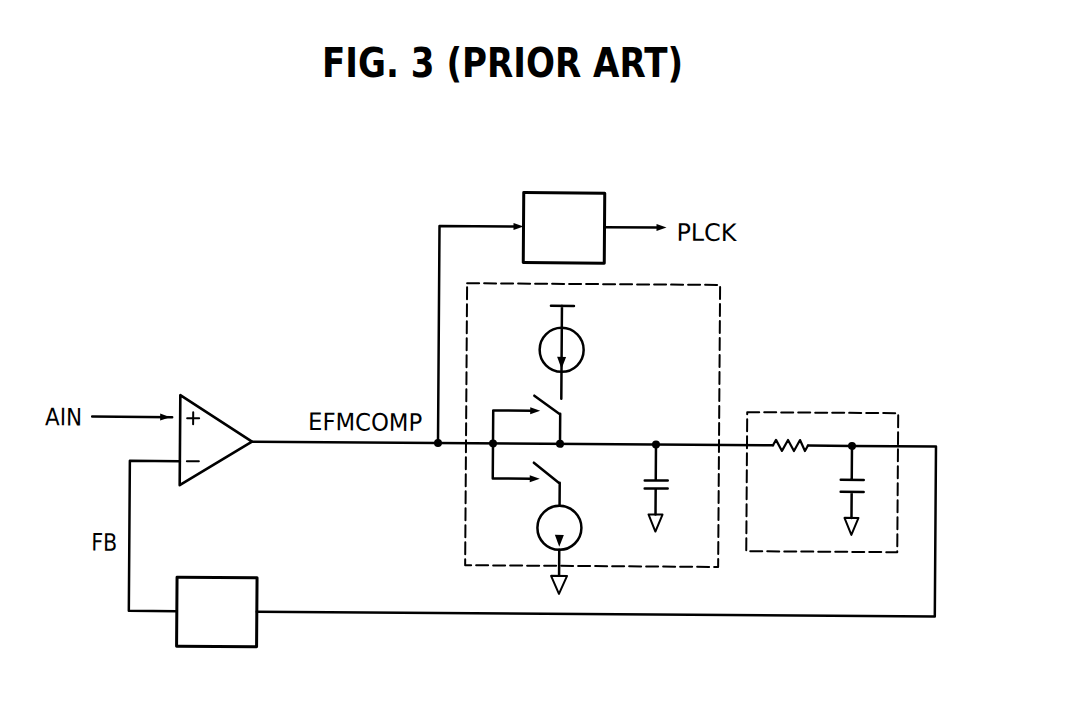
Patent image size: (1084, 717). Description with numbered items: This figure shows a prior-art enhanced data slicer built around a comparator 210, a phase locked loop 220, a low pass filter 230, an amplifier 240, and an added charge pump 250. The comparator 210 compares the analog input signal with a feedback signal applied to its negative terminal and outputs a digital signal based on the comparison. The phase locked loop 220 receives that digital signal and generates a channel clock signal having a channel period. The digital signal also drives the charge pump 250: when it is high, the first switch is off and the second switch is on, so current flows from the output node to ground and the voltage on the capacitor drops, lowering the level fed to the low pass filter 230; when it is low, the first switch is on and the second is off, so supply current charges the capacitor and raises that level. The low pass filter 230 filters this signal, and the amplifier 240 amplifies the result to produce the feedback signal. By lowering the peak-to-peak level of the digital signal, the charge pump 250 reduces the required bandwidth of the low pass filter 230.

The comparator 210 is at (220, 418).
The phase locked loop (PLL) 220 is at (567, 192).
The low pass filter 230 is at (827, 410).
The amplifier 240 is at (220, 579).
The charge pump 250 is at (720, 331).